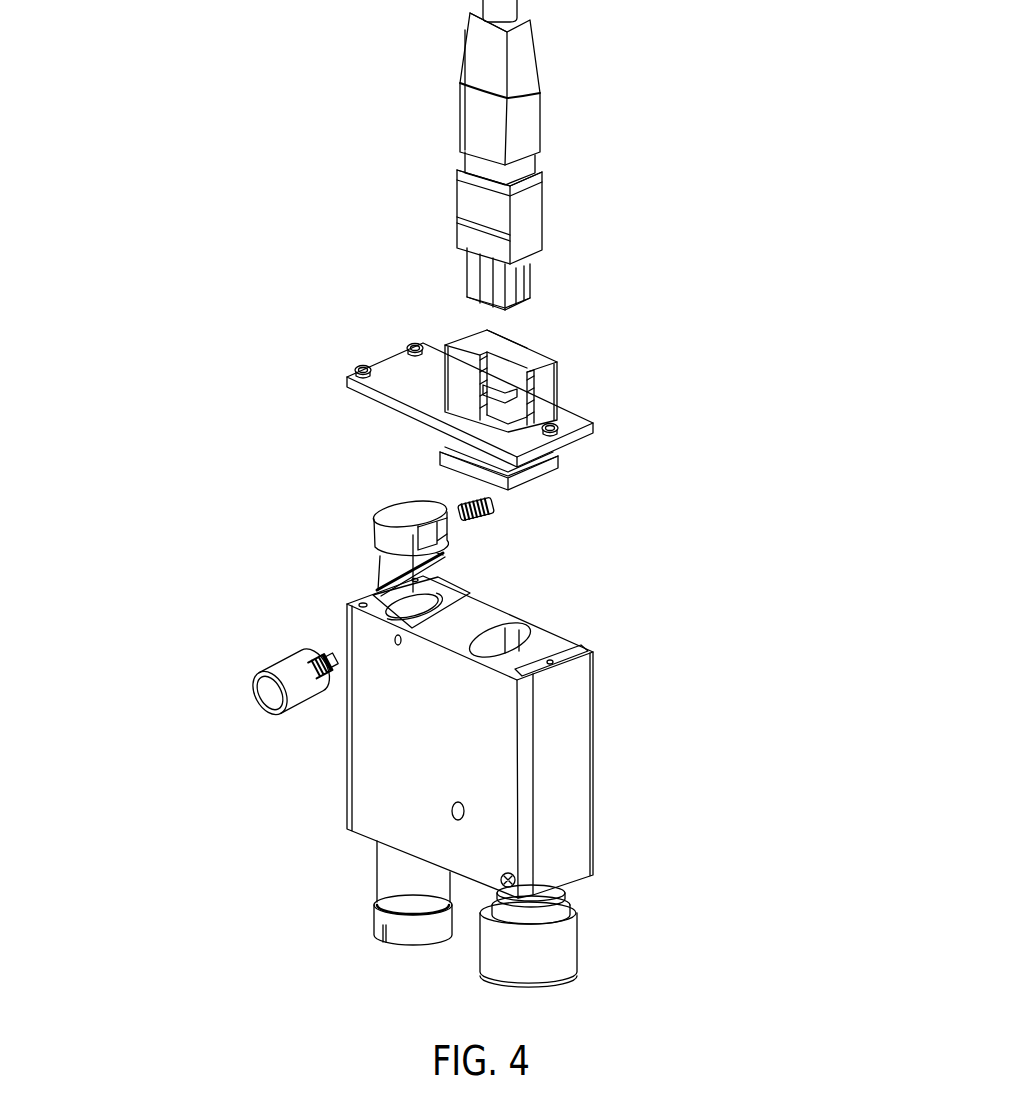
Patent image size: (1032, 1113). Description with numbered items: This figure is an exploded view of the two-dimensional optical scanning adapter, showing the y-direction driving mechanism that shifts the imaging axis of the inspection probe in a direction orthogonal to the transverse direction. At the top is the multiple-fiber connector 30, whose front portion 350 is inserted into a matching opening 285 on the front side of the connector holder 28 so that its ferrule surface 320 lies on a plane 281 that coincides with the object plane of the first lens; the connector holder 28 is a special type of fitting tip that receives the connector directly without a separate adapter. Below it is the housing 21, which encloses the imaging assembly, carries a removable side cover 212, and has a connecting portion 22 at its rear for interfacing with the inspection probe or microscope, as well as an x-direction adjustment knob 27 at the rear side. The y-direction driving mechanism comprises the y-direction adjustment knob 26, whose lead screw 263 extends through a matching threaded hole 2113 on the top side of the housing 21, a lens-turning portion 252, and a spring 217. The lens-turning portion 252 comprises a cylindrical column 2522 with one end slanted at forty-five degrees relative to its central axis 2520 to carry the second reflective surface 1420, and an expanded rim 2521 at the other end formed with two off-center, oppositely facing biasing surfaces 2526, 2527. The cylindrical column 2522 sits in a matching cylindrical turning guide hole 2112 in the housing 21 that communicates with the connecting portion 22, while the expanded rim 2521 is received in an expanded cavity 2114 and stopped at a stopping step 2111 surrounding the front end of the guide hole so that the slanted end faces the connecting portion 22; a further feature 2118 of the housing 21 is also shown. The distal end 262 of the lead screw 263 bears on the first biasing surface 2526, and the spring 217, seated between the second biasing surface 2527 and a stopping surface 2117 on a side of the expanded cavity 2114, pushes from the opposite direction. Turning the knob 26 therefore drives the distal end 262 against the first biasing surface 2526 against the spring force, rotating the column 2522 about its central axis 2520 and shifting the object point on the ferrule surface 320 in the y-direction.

The multiple-fiber connector 30 is at (532, 207).
The front portion 350 is at (473, 267).
The ferrule surface 320 is at (503, 314).
The connector holder 28 is at (586, 385).
The plane 281 is at (507, 363).
The matching opening 285 is at (487, 342).
The spring 217 is at (495, 508).
The lens-turning portion 252 is at (456, 478).
The central axis 2520 is at (425, 528).
The expanded rim 2521 is at (380, 537).
The cylindrical column 2522 is at (385, 574).
The first biasing surface 2526 is at (412, 510).
The second biasing surface 2527 is at (458, 535).
The second reflective surface 1420 is at (432, 578).
The housing 21 is at (457, 721).
The removable side cover 212 is at (560, 798).
The stopping step 2111 is at (402, 561).
The cylindrical turning guide hole 2112 is at (382, 585).
The threaded hole 2113 is at (398, 633).
The expanded cavity 2114 is at (440, 592).
The stopping surface 2117 is at (445, 597).
The slot 2118 is at (498, 642).
The connecting portion 22 is at (390, 873).
The x-direction adjustment knob 27 is at (560, 947).
The y-direction adjustment knob 26 is at (224, 723).
The lead screw 263 is at (320, 666).
The distal end 262 is at (331, 660).